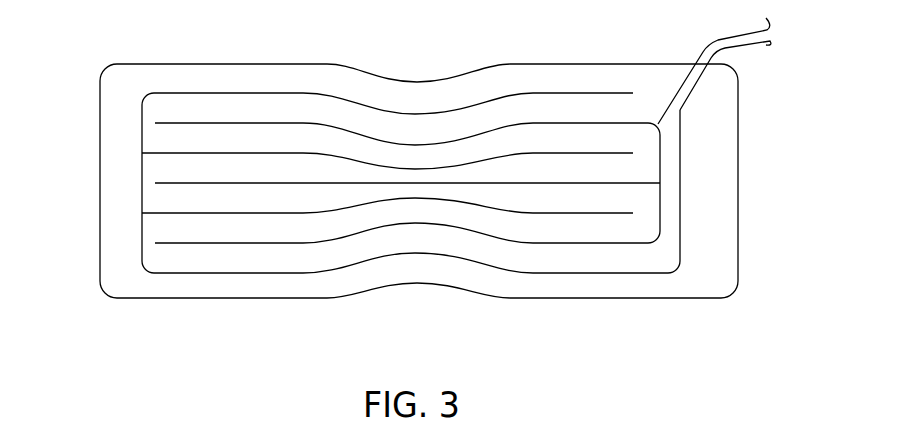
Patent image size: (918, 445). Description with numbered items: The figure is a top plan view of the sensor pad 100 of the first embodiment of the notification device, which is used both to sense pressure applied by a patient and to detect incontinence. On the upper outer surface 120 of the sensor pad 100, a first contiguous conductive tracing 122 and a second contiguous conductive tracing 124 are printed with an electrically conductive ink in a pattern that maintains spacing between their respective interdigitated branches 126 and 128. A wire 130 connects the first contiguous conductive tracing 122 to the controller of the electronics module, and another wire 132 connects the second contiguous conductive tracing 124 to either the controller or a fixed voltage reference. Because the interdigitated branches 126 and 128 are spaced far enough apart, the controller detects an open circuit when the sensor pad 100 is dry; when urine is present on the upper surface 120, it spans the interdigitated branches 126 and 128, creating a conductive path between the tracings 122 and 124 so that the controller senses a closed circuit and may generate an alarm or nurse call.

The sensor pad 100 is at (107, 70).
The upper outer surface 120 is at (333, 80).
The first contiguous conductive tracing 122 is at (140, 167).
The second contiguous conductive tracing 124 is at (618, 243).
The interdigitated branches 126 is at (441, 112).
The interdigitated branches 128 is at (512, 128).
The wire 130 is at (690, 67).
The wire 132 is at (702, 82).